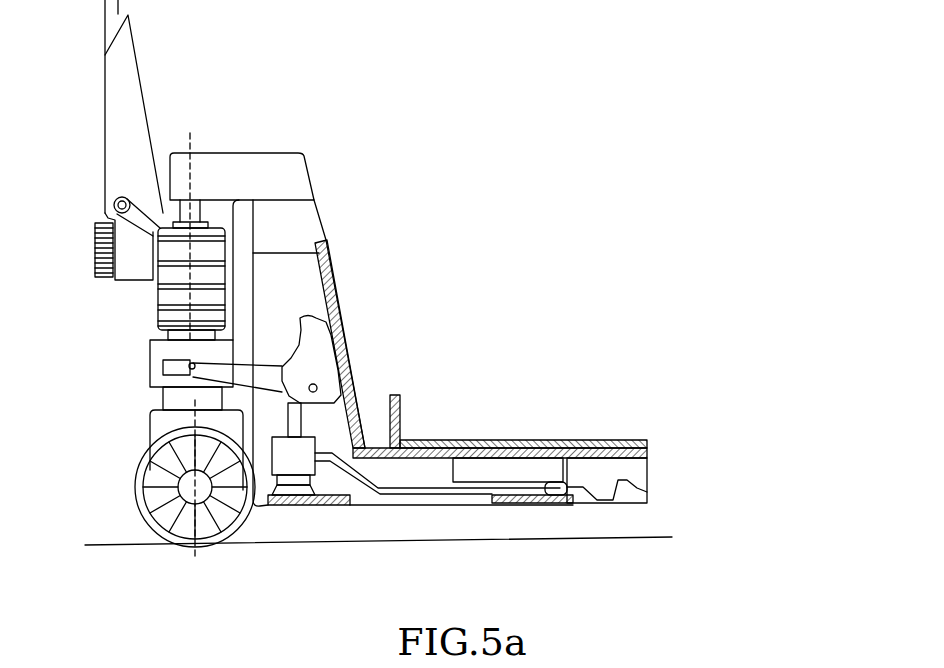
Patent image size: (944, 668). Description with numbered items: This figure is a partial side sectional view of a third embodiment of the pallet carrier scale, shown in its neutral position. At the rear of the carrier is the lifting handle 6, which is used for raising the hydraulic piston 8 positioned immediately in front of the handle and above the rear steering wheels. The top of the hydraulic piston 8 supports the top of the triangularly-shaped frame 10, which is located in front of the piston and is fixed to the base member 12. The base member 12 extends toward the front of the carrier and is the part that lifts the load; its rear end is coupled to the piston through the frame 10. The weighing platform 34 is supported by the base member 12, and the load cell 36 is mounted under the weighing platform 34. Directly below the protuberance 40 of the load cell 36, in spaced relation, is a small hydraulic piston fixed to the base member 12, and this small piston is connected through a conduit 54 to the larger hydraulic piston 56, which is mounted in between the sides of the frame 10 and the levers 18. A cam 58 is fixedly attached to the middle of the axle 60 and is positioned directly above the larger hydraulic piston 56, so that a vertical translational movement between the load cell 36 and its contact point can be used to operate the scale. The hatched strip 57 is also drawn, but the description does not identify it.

The lifting handle 6 is at (133, 83).
The hydraulic piston 8 is at (193, 213).
The triangularly-shaped frame 10 is at (317, 220).
The base member 12 is at (647, 462).
The levers 18 is at (160, 368).
The weighing platform 34 is at (582, 442).
The load cell 36 is at (482, 470).
The protuberance 40 is at (647, 495).
The conduit 54 is at (443, 487).
The larger hydraulic piston 56 is at (290, 507).
The support strip 57 is at (563, 503).
The cam 58 is at (327, 333).
The axle 60 is at (350, 352).